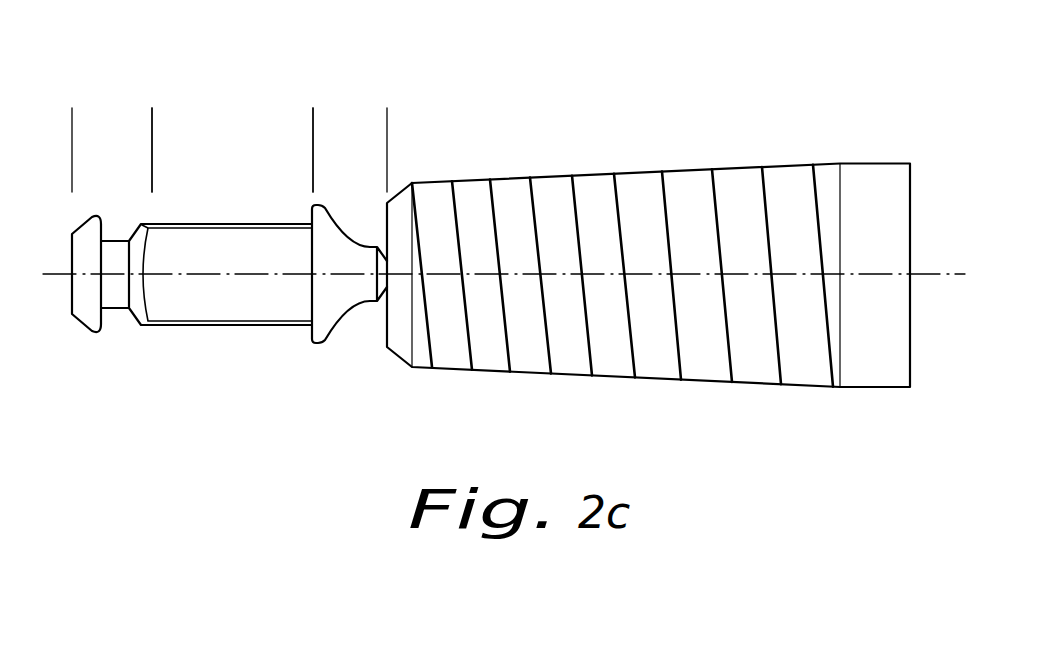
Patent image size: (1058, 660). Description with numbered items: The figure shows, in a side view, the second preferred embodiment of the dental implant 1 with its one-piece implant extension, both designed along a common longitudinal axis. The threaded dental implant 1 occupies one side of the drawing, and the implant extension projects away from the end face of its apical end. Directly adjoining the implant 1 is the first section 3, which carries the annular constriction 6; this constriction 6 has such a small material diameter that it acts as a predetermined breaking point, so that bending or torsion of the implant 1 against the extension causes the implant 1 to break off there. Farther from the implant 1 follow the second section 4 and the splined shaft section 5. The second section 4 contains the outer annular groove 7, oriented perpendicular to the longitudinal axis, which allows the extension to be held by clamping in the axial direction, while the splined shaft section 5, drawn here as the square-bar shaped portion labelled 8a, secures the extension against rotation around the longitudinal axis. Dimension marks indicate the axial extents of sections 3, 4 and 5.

The dental implant 1 is at (600, 132).
The first section 3 is at (387, 119).
The second section 4 is at (152, 119).
The splined shaft section 5 is at (313, 119).
The annular constriction 6 is at (357, 307).
The outer annular groove 7 is at (114, 308).
The shank 8a is at (220, 308).